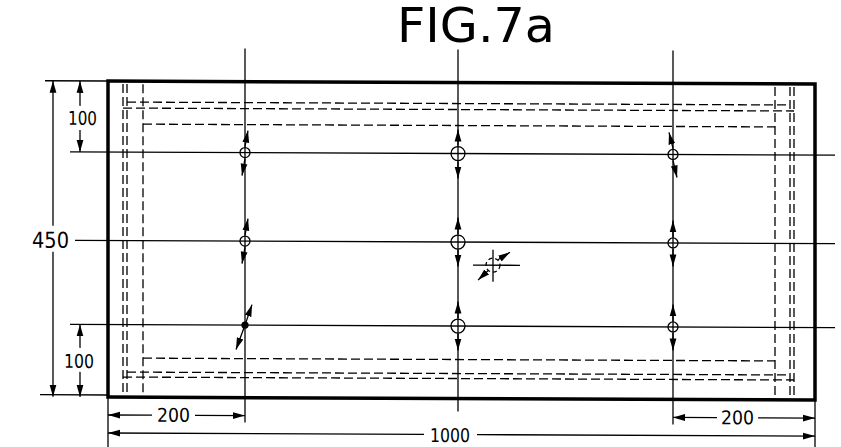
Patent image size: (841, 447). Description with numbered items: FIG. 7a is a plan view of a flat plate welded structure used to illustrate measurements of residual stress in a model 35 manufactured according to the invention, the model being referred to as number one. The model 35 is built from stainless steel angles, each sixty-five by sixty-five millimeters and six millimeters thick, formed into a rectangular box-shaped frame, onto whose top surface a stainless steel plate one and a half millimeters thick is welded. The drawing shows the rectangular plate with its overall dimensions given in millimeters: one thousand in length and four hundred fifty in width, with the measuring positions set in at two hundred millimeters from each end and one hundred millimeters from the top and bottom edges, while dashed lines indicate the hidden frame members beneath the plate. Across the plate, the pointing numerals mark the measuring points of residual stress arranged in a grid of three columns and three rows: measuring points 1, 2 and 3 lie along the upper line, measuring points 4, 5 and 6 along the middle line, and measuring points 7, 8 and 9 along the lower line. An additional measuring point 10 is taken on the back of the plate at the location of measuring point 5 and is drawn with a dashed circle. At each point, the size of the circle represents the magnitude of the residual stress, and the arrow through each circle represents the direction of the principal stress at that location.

The model 35 is at (167, 80).
The measuring point 1 is at (268, 160).
The measuring point 2 is at (480, 159).
The measuring point 3 is at (696, 161).
The measuring point 4 is at (268, 248).
The measuring point 5 is at (440, 246).
The measuring point 6 is at (694, 249).
The measuring point 7 is at (266, 329).
The measuring point 8 is at (479, 329).
The measuring point 9 is at (694, 331).
The measuring point 10 is at (575, 278).